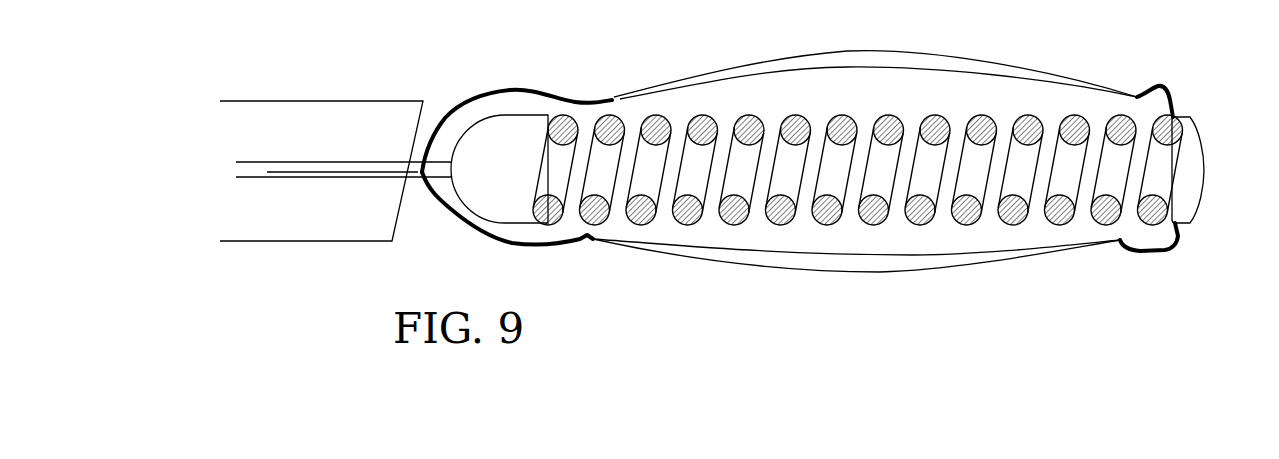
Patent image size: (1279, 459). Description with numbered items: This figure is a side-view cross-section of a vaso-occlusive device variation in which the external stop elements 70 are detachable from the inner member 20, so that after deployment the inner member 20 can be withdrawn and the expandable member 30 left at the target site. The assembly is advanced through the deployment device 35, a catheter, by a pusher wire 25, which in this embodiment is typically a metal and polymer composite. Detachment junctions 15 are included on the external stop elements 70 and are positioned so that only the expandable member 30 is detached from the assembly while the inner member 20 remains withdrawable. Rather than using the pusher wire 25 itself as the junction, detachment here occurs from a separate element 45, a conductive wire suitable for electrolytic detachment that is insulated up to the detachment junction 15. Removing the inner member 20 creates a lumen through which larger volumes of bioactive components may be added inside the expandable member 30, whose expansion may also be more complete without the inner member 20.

The detachment junction 15 is at (423, 154).
The inner member 20 is at (751, 117).
The pusher wire 25 is at (253, 170).
The expandable member 30 is at (688, 78).
The deployment device 35 is at (377, 108).
The separate element 45 is at (297, 174).
The external stop element 70 is at (517, 90).